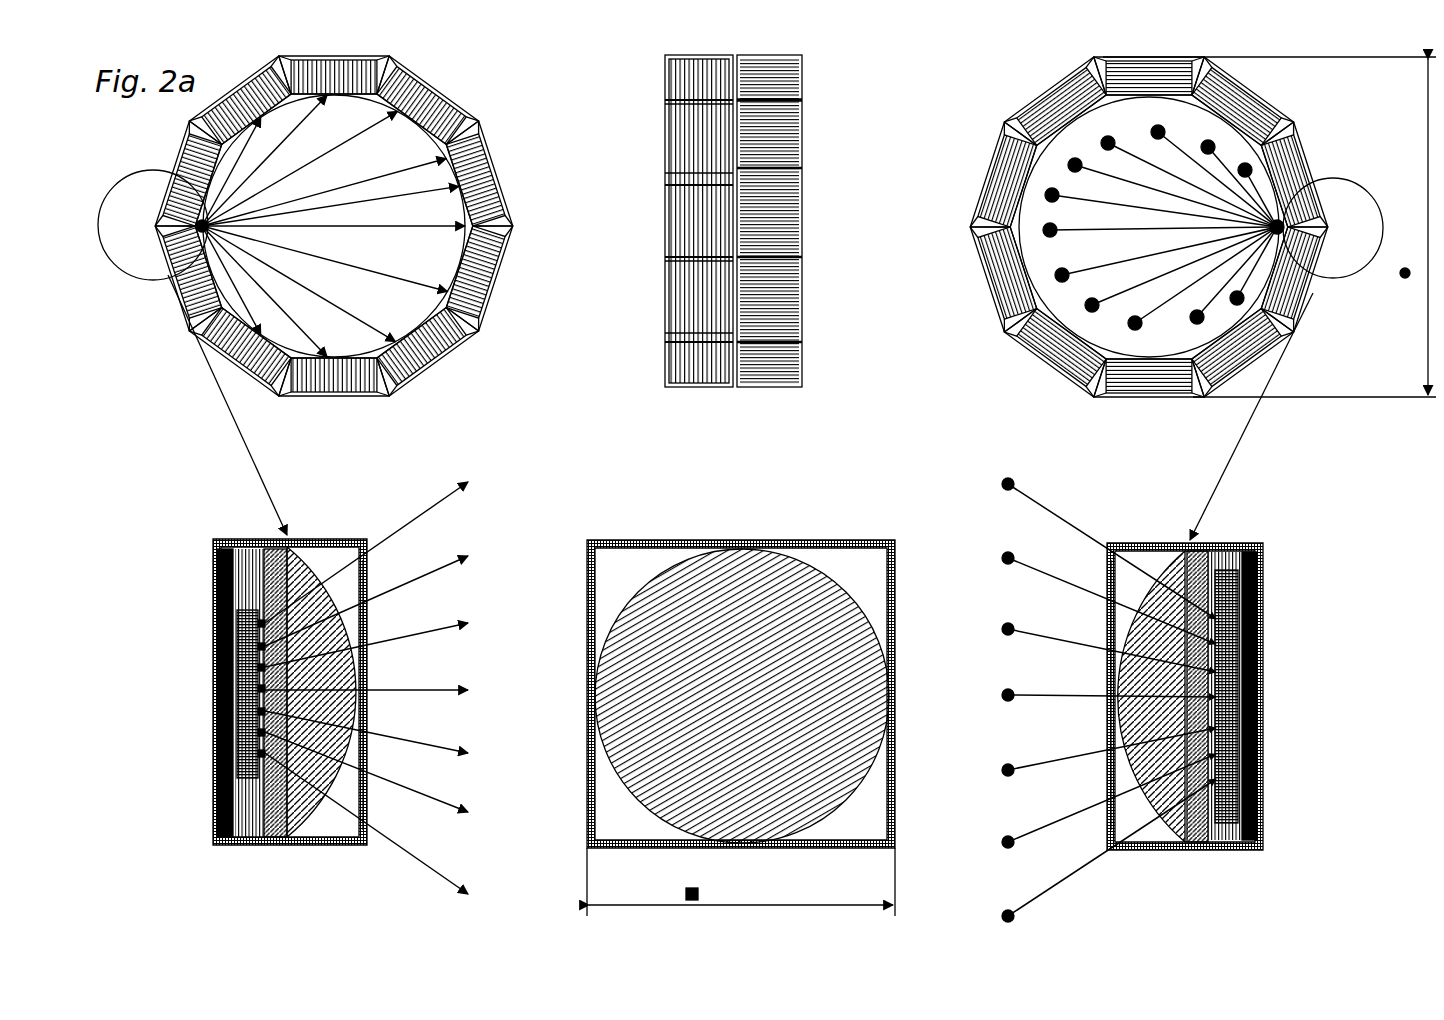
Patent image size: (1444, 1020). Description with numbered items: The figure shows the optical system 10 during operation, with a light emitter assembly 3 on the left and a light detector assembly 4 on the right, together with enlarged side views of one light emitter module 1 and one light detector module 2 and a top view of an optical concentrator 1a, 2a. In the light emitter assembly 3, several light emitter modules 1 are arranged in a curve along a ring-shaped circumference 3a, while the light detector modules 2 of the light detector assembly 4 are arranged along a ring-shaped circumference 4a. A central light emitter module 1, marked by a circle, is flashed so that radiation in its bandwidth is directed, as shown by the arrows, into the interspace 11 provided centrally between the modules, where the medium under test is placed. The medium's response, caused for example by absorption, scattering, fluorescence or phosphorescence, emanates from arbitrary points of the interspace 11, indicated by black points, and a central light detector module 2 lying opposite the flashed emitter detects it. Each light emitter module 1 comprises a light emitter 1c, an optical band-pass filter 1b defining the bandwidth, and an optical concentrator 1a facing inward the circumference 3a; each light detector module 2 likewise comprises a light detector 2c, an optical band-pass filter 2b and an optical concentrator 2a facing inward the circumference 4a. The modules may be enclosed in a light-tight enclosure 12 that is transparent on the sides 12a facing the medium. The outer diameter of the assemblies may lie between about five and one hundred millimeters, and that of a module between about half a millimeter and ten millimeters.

The light emitter module 1 is at (230, 510).
The optical concentrator 1a is at (682, 595).
The optical band-pass filter 1b is at (413, 715).
The light emitter 1c is at (244, 765).
The light detector module 2 is at (1248, 518).
The optical concentrator 2a is at (1040, 665).
The optical band-pass filter 2b is at (1039, 754).
The light detector 2c is at (1237, 750).
The light emitter assembly 3 is at (492, 120).
The ring-shaped circumference of light emitter assembly 3a is at (458, 186).
The light detector assembly 4 is at (964, 310).
The ring-shaped circumference of light detector assembly 4a is at (1152, 98).
The optical system 10 is at (834, 126).
The interspace 11 is at (386, 166).
The light-tight enclosure 12 is at (338, 540).
The sides 12a is at (370, 756).